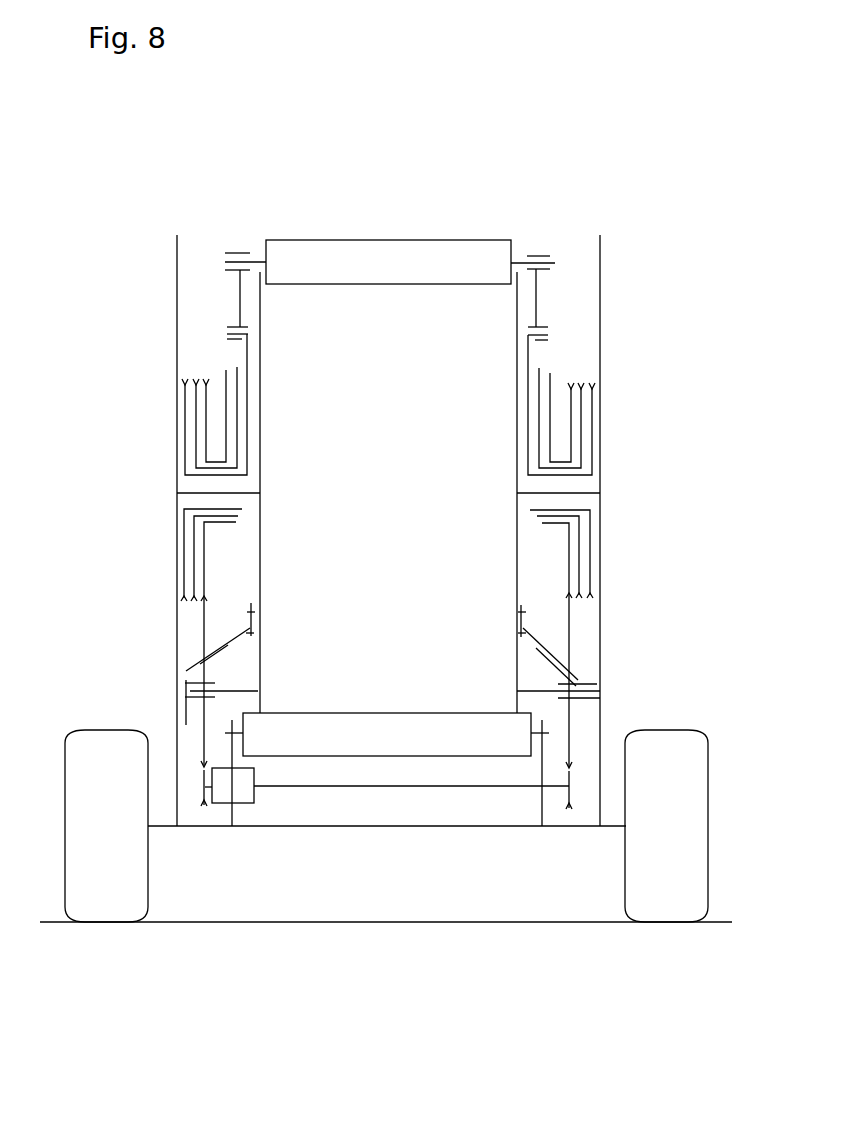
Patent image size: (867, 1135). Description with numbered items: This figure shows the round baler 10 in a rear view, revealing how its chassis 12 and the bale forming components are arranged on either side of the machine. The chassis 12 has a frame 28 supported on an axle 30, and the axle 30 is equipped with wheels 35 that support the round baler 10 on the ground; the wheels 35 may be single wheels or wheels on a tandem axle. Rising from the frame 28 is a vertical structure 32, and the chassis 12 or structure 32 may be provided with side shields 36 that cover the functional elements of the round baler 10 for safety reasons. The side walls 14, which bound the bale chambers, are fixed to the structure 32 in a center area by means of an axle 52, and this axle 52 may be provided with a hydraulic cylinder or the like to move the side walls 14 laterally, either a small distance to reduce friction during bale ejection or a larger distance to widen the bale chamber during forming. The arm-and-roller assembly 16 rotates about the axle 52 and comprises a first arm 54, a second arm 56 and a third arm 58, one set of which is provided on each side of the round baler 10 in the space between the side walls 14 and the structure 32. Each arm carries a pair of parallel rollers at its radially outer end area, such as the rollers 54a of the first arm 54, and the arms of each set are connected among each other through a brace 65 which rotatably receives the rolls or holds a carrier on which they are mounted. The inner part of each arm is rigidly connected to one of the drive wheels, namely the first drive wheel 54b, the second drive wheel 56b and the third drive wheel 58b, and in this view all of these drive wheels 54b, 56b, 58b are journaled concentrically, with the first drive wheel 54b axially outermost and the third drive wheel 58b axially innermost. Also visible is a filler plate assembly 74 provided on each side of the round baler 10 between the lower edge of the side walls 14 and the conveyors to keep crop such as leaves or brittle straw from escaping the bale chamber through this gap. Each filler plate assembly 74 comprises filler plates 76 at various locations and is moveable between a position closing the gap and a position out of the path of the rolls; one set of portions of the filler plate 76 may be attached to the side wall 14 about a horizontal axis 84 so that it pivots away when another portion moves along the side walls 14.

The round baler 10 is at (482, 203).
The chassis 12 is at (620, 660).
The side walls 14 is at (517, 303).
The arm-and-roller assembly 16 is at (610, 407).
The frame 28 is at (598, 753).
The axle 30 is at (487, 826).
The vertical structure 32 is at (600, 612).
The wheels 35 is at (708, 836).
The side shields 36 is at (600, 275).
The axle 52 is at (187, 491).
The first arm 54 is at (247, 379).
The rollers 54a is at (342, 250).
The first drive wheel 54b is at (185, 380).
The second arm 56 is at (237, 425).
The second drive wheel 56b is at (196, 380).
The third arm 58 is at (226, 458).
The third drive wheel 58b is at (206, 380).
The brace 65 is at (518, 258).
The filler plate assembly 74 is at (196, 646).
The filler plates 76 is at (218, 653).
The horizontal axis 84 is at (253, 636).